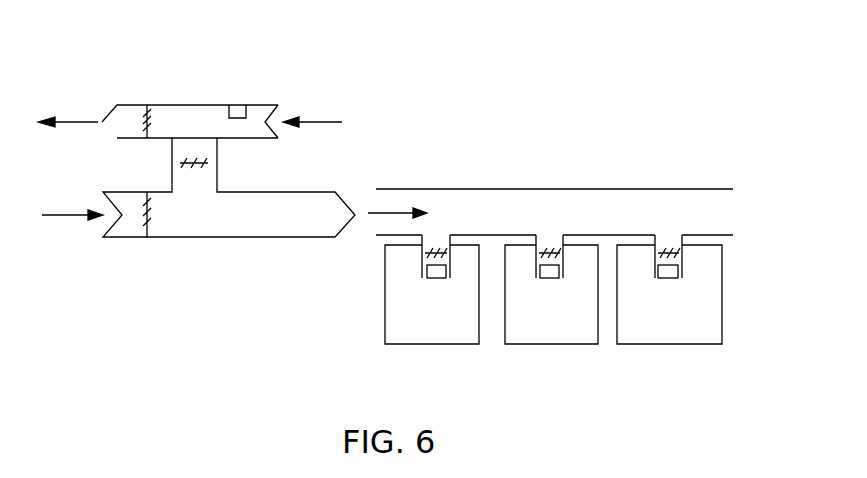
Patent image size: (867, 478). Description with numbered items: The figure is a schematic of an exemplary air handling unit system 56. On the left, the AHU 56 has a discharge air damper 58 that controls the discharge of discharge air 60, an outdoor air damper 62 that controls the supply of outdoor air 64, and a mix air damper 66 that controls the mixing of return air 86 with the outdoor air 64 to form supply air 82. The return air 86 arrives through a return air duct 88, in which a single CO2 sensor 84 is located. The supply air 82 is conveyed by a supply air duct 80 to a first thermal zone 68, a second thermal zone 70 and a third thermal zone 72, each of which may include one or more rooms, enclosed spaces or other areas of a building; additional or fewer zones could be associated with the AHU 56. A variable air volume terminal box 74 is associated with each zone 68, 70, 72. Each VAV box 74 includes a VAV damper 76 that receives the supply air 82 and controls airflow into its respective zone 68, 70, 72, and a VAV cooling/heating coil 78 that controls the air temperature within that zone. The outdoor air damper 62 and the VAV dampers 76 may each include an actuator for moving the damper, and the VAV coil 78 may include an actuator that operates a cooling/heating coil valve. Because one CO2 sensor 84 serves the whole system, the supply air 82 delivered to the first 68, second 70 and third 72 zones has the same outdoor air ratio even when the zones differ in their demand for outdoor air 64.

The air handling unit system 56 is at (535, 240).
The discharge air damper 58 is at (155, 105).
The discharge air 60 is at (77, 122).
The outdoor air damper 62 is at (157, 222).
The outdoor air 64 is at (67, 217).
The mix air damper 66 is at (173, 173).
The first thermal zone 68 is at (402, 333).
The second thermal zone 70 is at (540, 333).
The third thermal zone 72 is at (657, 337).
The variable air volume terminal box 74 is at (424, 261).
The VAV damper 76 is at (435, 242).
The VAV cooling/heating coil 78 is at (422, 278).
The supply air duct 80 is at (543, 189).
The supply air 82 is at (392, 207).
The CO2 sensor 84 is at (235, 105).
The return air 86 is at (315, 120).
The return air duct 88 is at (268, 105).